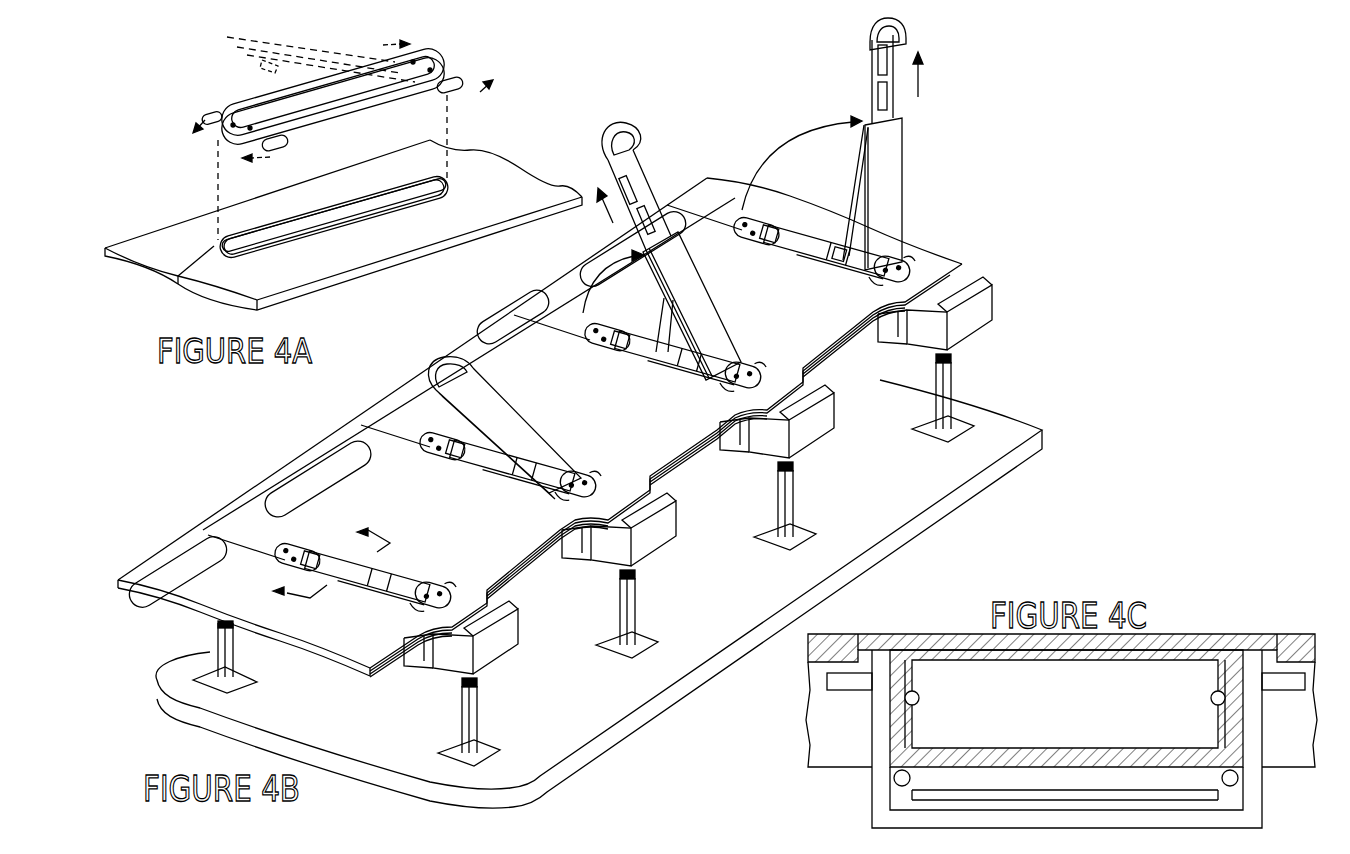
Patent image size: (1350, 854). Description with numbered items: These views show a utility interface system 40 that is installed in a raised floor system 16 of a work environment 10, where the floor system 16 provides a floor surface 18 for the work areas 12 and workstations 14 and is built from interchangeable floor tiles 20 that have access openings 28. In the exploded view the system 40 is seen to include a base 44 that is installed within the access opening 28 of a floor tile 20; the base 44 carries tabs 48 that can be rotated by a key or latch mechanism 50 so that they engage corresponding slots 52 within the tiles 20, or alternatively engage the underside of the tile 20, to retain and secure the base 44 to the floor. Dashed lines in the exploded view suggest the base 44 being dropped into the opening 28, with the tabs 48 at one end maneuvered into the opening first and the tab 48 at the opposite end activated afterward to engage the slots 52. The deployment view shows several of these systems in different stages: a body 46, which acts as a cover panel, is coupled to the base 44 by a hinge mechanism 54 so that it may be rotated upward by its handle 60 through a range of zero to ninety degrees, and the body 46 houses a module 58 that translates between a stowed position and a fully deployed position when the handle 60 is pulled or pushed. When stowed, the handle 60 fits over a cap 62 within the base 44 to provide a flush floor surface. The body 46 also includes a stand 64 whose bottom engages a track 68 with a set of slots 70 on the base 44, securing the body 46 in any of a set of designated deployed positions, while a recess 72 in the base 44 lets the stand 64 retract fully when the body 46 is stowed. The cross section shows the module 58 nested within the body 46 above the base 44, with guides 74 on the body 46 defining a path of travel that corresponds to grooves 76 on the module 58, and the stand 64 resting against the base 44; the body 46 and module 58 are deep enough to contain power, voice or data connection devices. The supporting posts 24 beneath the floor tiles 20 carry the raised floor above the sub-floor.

In FIG. 4B, the work environment 10 is at (1106, 134).
In FIG. 4B, the work area 12 is at (1091, 204).
In FIG. 4B, the workstation 14 is at (1072, 279).
In FIG. 4B, the raised floor system 16 is at (305, 409).
In FIG. 4B, the floor surface 18 is at (258, 488).
In FIG. 4A, the floor tile 20 is at (143, 268).
In FIG. 4B, the floor tile 20 is at (408, 378).
In FIG. 4B, the support post 24 is at (952, 388).
In FIG. 4A, the access opening 28 is at (410, 208).
In FIG. 4B, the utility interface system 40 is at (942, 137).
In FIG. 4B, the base 44 is at (772, 248).
In FIG. 4C, the base 44 is at (872, 810).
In FIG. 4B, the body 46 is at (903, 191).
In FIG. 4C, the body 46 is at (921, 634).
In FIG. 4A, the tabs 48 is at (457, 80).
In FIG. 4A, the latch mechanism 50 is at (412, 56).
In FIG. 4B, the latch mechanism 50 is at (745, 364).
In FIG. 4A, the slots 52 is at (417, 182).
In FIG. 4B, the hinge mechanism 54 is at (898, 258).
In FIG. 4B, the module 58 is at (893, 118).
In FIG. 4C, the module 58 is at (1030, 747).
In FIG. 4B, the handle 60 is at (870, 32).
In FIG. 4B, the cap 62 is at (736, 226).
In FIG. 4B, the stand 64 is at (853, 210).
In FIG. 4C, the stand 64 is at (911, 778).
In FIG. 4B, the track 68 is at (802, 251).
In FIG. 4B, the slots 70 is at (826, 256).
In FIG. 4B, the recess 72 is at (813, 224).
In FIG. 4C, the guides 74 is at (905, 693).
In FIG. 4C, the grooves 76 is at (919, 701).